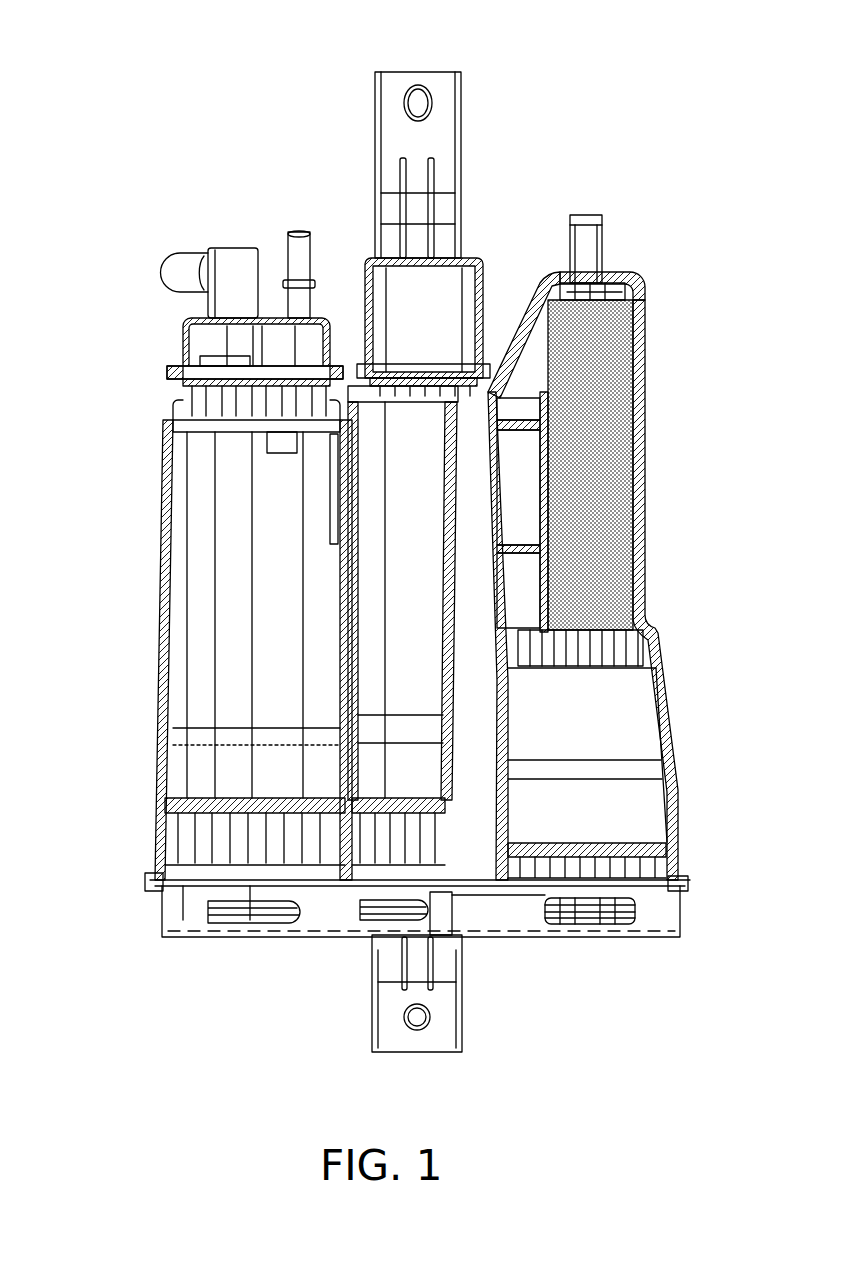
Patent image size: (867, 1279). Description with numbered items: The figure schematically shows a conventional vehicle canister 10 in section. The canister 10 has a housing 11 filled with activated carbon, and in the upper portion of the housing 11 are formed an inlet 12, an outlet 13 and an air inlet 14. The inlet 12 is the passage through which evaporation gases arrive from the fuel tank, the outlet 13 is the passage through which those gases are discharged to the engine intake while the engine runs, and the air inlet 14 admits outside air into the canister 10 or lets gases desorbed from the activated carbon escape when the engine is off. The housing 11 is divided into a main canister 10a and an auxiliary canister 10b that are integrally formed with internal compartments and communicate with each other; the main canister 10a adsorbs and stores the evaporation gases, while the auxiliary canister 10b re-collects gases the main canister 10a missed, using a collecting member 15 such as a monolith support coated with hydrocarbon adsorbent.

The canister 10 is at (190, 56).
The main canister 10a is at (170, 406).
The auxiliary canister 10b is at (637, 265).
The housing 11 is at (166, 490).
The inlet 12 is at (232, 270).
The outlet 13 is at (300, 255).
The air inlet 14 is at (585, 245).
The filter 15 is at (600, 424).